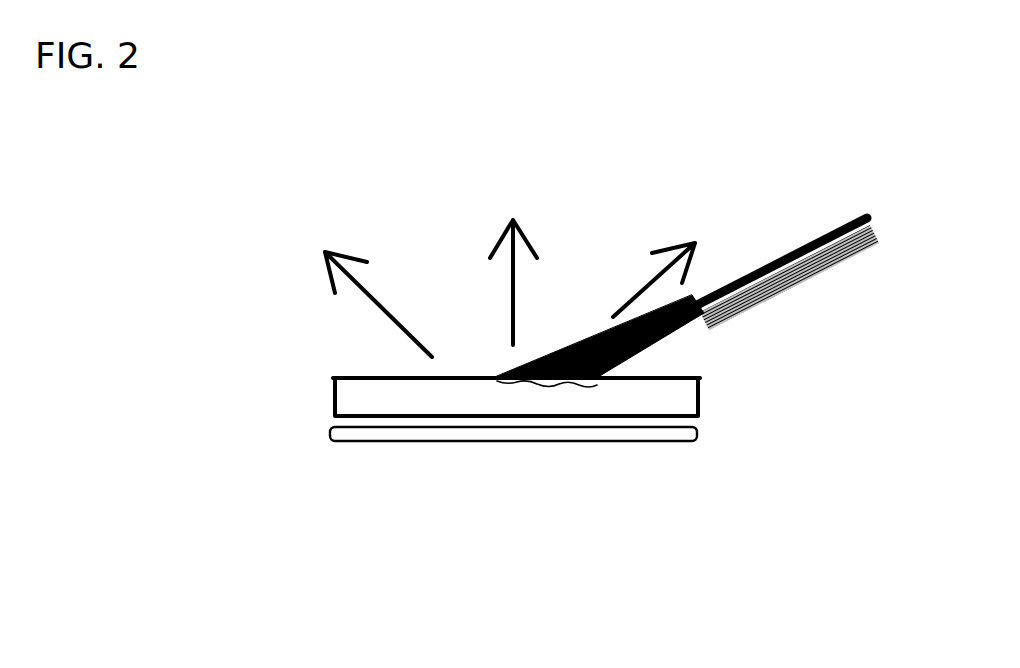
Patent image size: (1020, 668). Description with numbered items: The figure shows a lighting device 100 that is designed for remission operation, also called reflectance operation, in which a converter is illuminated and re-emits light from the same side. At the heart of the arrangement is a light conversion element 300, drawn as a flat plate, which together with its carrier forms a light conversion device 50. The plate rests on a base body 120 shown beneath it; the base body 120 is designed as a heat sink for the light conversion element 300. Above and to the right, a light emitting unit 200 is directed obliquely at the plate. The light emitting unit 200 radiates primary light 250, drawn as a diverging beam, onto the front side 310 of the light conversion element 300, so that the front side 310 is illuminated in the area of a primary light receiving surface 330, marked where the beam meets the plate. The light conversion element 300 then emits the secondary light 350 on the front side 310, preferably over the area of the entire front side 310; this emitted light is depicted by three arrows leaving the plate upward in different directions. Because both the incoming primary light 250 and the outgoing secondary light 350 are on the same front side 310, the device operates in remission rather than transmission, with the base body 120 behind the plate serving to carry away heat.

The lighting device 100 is at (353, 510).
The light conversion device 50 is at (332, 395).
The base body 120 is at (699, 432).
The light emitting unit 200 is at (813, 278).
The primary light 250 is at (637, 347).
The light conversion element 300 is at (701, 398).
The front side 310 is at (701, 377).
The primary light receiving surface 330 is at (540, 382).
The secondary light 350 is at (519, 196).